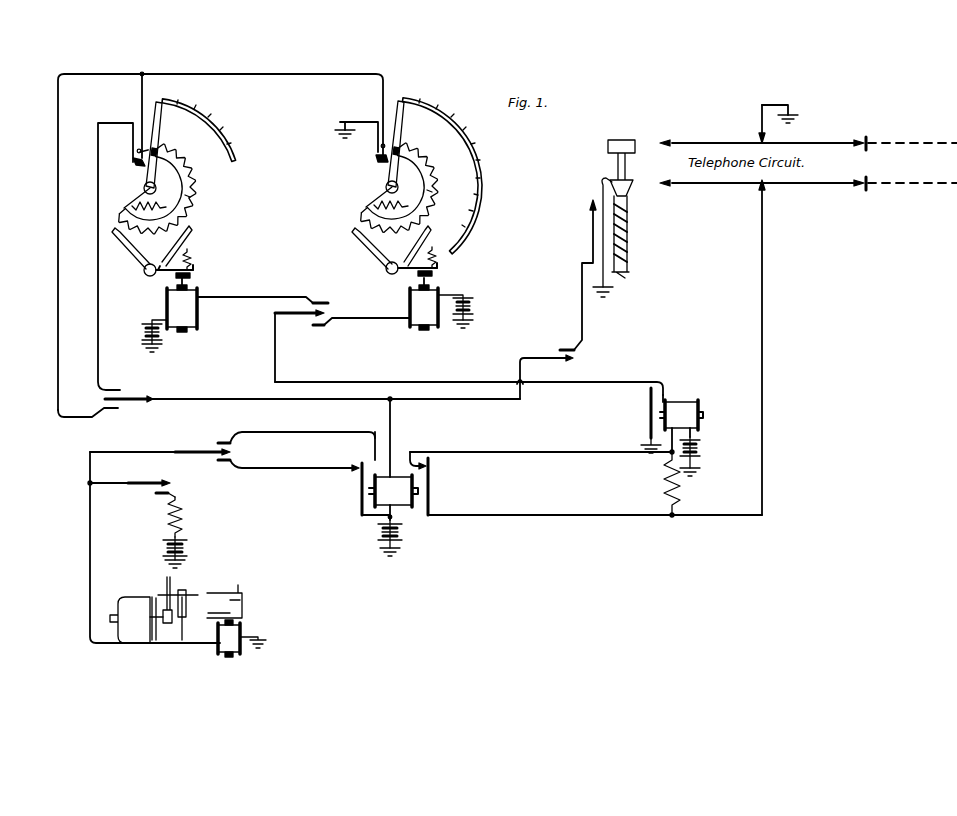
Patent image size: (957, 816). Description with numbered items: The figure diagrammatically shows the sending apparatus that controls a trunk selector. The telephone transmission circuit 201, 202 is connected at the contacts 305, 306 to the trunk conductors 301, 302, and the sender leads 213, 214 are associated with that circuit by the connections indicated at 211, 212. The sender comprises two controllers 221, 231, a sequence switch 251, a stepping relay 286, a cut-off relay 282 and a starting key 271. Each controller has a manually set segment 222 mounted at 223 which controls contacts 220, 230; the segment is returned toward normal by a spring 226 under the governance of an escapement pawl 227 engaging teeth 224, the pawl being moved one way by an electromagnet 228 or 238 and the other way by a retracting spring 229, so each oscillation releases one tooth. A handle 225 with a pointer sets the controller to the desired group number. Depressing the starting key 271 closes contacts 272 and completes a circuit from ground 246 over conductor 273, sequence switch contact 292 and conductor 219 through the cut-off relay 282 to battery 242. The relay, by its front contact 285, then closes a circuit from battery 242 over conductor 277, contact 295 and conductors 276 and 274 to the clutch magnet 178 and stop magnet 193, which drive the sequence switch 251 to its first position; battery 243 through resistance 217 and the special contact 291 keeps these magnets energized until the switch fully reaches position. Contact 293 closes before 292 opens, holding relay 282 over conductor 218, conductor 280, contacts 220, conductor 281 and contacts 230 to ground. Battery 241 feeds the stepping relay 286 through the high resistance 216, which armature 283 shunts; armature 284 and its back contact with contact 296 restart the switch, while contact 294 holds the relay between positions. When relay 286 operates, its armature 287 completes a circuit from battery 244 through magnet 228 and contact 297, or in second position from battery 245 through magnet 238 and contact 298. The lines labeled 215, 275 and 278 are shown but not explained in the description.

The sender sequence switch clutch magnet 178 is at (140, 643).
The stop magnet 193 is at (232, 647).
The telephone transmission circuit conductor 201 is at (805, 143).
The telephone transmission circuit conductor 202 is at (806, 183).
The connection contact 211 is at (761, 136).
The connection contact 212 is at (766, 183).
The sender lead 213 is at (764, 102).
The sender lead 214 is at (762, 298).
The conductor 215 is at (570, 453).
The high resistance 216 is at (658, 490).
The resistance 217 is at (180, 514).
The conductor 218 is at (248, 399).
The conductor 219 is at (480, 399).
The contacts of controller 220 is at (134, 156).
The controller 221 is at (206, 132).
The segment 222 is at (172, 157).
The mounting 223 is at (146, 189).
The teeth 224 is at (196, 198).
The handle 225 is at (160, 103).
The spring 226 is at (136, 205).
The escapement pawl 227 is at (144, 270).
The electromagnet 228 is at (182, 305).
The retracting spring 229 is at (190, 262).
The contacts of controller 230 is at (376, 131).
The controller 231 is at (451, 176).
The electromagnet 238 is at (424, 304).
The battery 241 is at (704, 448).
The grounded battery 242 is at (404, 532).
The battery 243 is at (186, 544).
The battery 244 is at (156, 330).
The battery 245 is at (472, 304).
The ground 246 is at (614, 291).
The sequence switch 251 is at (182, 628).
The starting key 271 is at (633, 213).
The contacts 272 is at (590, 203).
The conductor 273 is at (582, 325).
The conductor 274 is at (90, 575).
The conductor 275 is at (120, 481).
The conductor 276 is at (160, 452).
The conductor 277 is at (332, 432).
The conductor 278 is at (320, 468).
The conductor 280 is at (98, 370).
The conductor 281 is at (300, 75).
The cut-off relay 282 is at (393, 458).
The armature 283 is at (430, 466).
The armature 284 is at (356, 489).
The front contact 285 is at (366, 466).
The stepping relay 286 is at (681, 423).
The armature 287 is at (660, 394).
The special sequence switch contact 291 is at (170, 492).
The sequence switch contact 292 is at (580, 350).
The sequence switch contact 293 is at (112, 392).
The sequence switch contact 294 is at (100, 413).
The sequence switch contact 295 is at (232, 444).
The sequence switch contact 296 is at (232, 460).
The sequence switch contact 297 is at (328, 297).
The sequence switch contact 298 is at (322, 327).
The trunk conductor 301 is at (912, 132).
The trunk conductor 302 is at (912, 193).
The contact 305 is at (868, 140).
The contact 306 is at (868, 186).